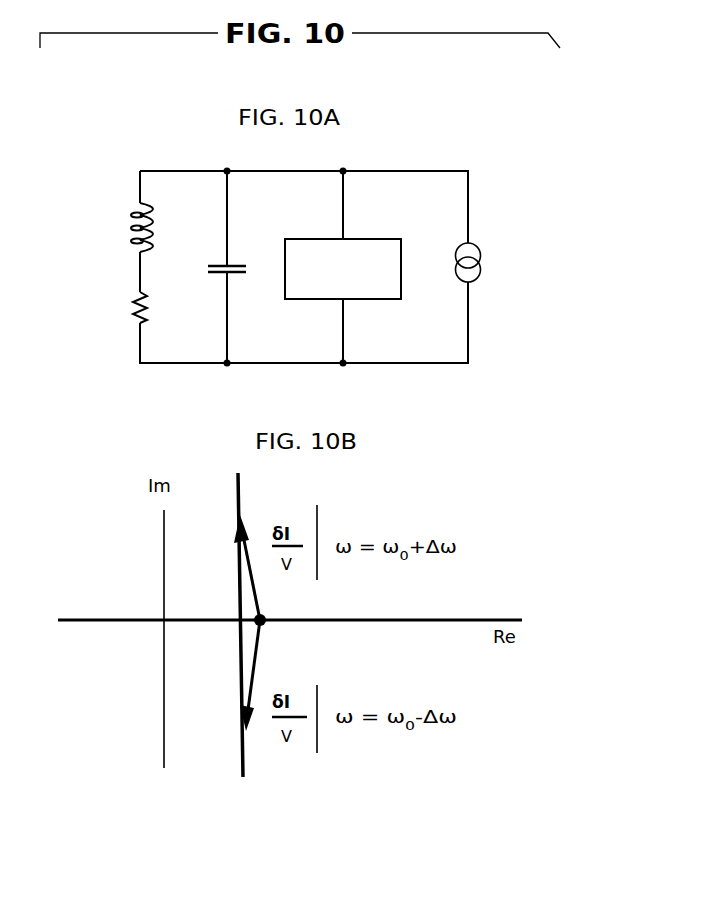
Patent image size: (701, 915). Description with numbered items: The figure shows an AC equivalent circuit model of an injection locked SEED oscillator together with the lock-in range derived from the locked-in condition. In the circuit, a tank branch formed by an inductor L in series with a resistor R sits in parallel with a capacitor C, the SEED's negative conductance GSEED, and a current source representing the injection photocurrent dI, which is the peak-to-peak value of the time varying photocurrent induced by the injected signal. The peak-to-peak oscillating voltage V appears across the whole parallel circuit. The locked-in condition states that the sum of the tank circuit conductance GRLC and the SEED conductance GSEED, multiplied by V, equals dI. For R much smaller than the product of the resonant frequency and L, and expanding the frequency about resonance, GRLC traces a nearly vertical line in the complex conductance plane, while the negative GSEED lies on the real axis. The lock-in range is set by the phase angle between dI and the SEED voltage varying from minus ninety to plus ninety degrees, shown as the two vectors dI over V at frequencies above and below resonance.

In FIG. 10A, the peak-to-peak oscillating voltage V is at (92, 171).
In FIG. 10A, the inductor L is at (152, 227).
In FIG. 10A, the resistor R is at (151, 307).
In FIG. 10A, the capacitor C is at (227, 267).
In FIG. 10A, the SEED conductance GSEED is at (343, 267).
In FIG. 10B, the SEED conductance GSEED is at (298, 637).
In FIG. 10A, the injection photocurrent dI is at (498, 242).
In FIG. 10B, the tank circuit conductance GRLC is at (237, 642).